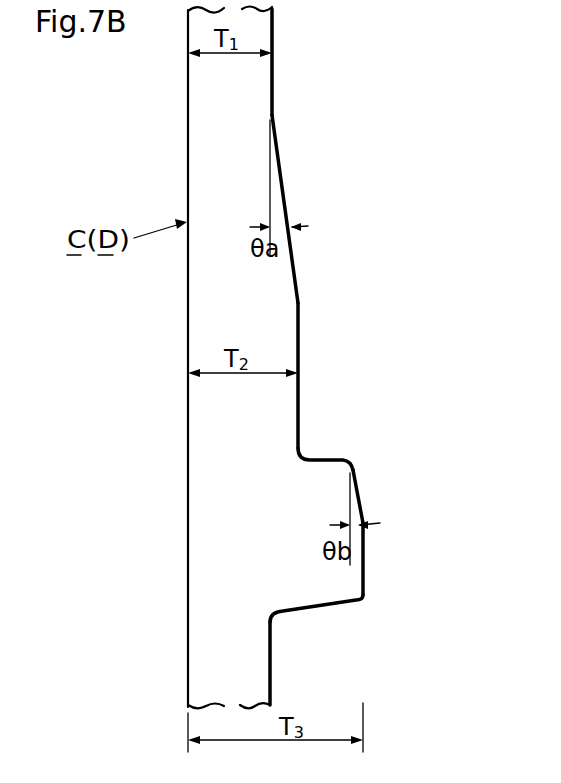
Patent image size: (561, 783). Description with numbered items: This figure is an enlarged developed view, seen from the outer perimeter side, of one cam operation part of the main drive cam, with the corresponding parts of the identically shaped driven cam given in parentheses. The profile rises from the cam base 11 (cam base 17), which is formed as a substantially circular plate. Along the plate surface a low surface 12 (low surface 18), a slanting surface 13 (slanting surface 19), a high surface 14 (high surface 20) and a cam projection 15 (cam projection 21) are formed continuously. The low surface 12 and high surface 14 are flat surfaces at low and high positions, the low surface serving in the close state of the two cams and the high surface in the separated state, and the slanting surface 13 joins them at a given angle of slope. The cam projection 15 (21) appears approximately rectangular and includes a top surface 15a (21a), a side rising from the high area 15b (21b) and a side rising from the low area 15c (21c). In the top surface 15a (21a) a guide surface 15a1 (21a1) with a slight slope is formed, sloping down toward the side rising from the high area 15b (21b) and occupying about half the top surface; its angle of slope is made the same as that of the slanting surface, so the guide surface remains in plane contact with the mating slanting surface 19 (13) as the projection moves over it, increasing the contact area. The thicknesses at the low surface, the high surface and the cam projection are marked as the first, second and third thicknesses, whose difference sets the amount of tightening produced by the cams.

The cam base 11 is at (168, 358).
The cam base 17 is at (184, 442).
The low surface 12 is at (324, 357).
The low surface 18 is at (294, 7).
The slanting surface 13 is at (335, 205).
The slanting surface 19 is at (295, 104).
The high surface 14 is at (358, 379).
The high surface 20 is at (324, 313).
The cam projection 15 is at (392, 542).
The cam projection 21 is at (392, 542).
The top surface 15a is at (439, 559).
The top surface 21a is at (367, 566).
The guide surface 15a1 is at (430, 494).
The guide surface 21a1 is at (368, 460).
The side rising from the high area 15b is at (404, 444).
The side rising from the high area 21b is at (343, 459).
The side rising from the low area 15c is at (391, 630).
The side rising from the low area 21c is at (328, 606).